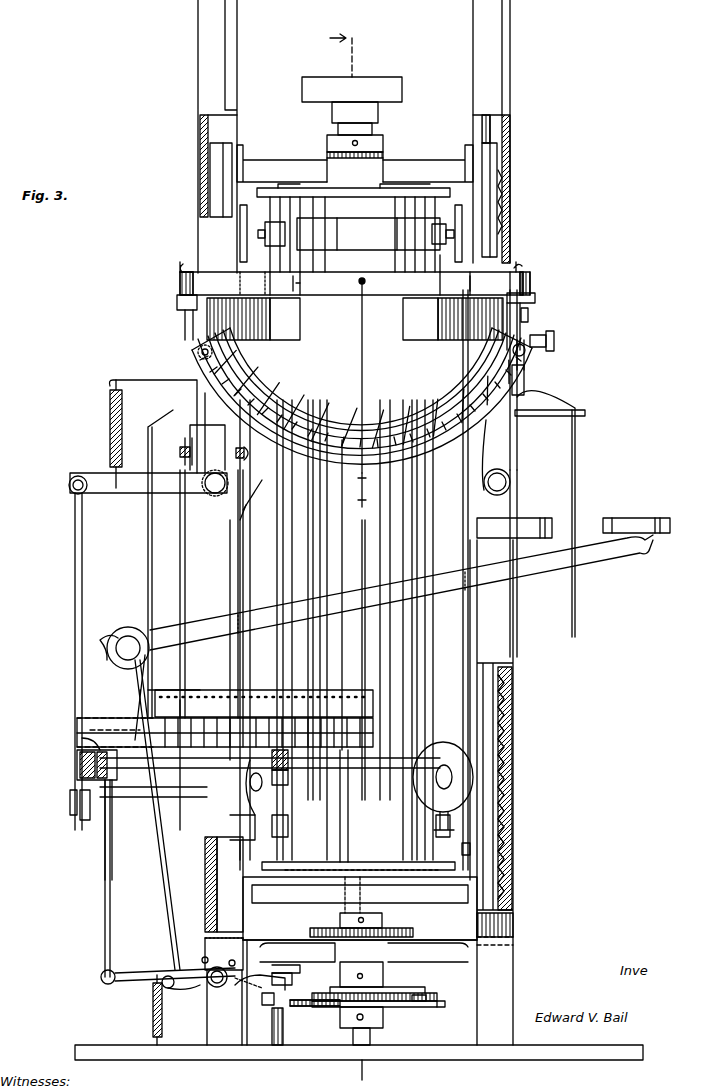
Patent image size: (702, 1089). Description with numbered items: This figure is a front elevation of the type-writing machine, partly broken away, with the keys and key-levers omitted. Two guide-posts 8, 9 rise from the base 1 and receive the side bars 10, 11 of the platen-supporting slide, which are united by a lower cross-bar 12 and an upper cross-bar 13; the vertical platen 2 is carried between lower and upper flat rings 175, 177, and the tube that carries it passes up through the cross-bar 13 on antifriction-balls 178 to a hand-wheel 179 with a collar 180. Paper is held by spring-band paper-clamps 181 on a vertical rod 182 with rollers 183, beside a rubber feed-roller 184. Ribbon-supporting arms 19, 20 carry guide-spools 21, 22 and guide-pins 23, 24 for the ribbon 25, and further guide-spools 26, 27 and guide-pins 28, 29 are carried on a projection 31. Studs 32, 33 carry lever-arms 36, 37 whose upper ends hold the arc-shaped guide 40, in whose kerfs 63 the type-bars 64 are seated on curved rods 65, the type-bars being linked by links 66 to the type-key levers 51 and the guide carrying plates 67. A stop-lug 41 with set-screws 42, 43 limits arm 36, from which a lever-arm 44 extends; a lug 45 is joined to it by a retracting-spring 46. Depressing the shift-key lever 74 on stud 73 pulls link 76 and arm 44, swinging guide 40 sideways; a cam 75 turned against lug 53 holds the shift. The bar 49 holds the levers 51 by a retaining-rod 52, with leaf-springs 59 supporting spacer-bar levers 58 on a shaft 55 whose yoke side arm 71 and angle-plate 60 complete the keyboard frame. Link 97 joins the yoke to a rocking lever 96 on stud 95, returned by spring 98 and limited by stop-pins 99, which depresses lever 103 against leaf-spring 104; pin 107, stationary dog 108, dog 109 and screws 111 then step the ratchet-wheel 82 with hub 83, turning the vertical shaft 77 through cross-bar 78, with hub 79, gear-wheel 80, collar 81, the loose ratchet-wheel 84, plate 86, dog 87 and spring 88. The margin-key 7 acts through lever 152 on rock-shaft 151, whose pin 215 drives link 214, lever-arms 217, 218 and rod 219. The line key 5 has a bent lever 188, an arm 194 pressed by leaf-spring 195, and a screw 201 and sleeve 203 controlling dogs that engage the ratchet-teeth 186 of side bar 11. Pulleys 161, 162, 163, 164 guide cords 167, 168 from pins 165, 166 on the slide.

The base 1 is at (432, 1072).
The platen 2 is at (287, 630).
The platen-raising or line key 5 is at (514, 528).
The margin-key 7 is at (636, 525).
The guide-post 8 is at (217, 136).
The guide-post 9 is at (491, 131).
The side bar 10 is at (222, 162).
The side bar 11 is at (492, 172).
The cross-bar 12 is at (418, 895).
The cross-bar 13 is at (412, 166).
The ribbon-supporting arm 19 is at (453, 319).
The ribbon-supporting arm 20 is at (253, 319).
The guide-spool 21 is at (440, 270).
The guide-spool 22 is at (262, 268).
The guide-pin 23 is at (457, 283).
The guide-pin 24 is at (300, 283).
The ribbon 25 is at (201, 281).
The guide-spool 26 is at (182, 263).
The guide-spool 27 is at (518, 265).
The guide-pin 28 is at (176, 270).
The guide-pin 29 is at (531, 278).
The projection 31 is at (536, 300).
The stud 32 is at (215, 495).
The stud 33 is at (497, 482).
The lever-arm 36 is at (207, 447).
The lever-arm 37 is at (499, 390).
The arc-shaped guide 40 is at (526, 368).
The stop-lug 41 is at (185, 445).
The set-screw 42 is at (248, 452).
The set-screw 43 is at (180, 453).
The lever-arm 44 is at (100, 475).
The lug 45 is at (146, 380).
The retracting-spring 46 is at (108, 412).
The bar 49 is at (115, 732).
The type-key lever 51 is at (148, 556).
The retaining-rod 52 is at (220, 700).
The lug or projection 53 is at (80, 758).
The transverse shaft 55 is at (220, 770).
The spacer-bar lever 58 is at (280, 730).
The bent leaf-spring 59 is at (288, 780).
The angle-plate 60 is at (195, 692).
The kerf 63 is at (196, 344).
The type-bar 64 is at (364, 358).
The curved rod 65 is at (528, 349).
The link 66 is at (364, 490).
The plate 67 is at (196, 348).
The side arm 71 is at (86, 740).
The stud 73 is at (118, 808).
The lever 74 is at (88, 820).
The cam 75 is at (70, 815).
The link 76 is at (74, 586).
The vertical shaft 77 is at (344, 903).
The cross-bar 78 is at (428, 952).
The hub 79 is at (338, 919).
The gear-wheel 80 is at (308, 932).
The collar 81 is at (350, 968).
The ratchet-wheel 82 is at (315, 1016).
The hub 83 is at (384, 1017).
The ratchet-wheel 84 is at (374, 991).
The plate 86 is at (410, 988).
The dog 87 is at (440, 1008).
The spring 88 is at (428, 998).
The stud 95 is at (214, 990).
The rocking lever 96 is at (138, 972).
The link 97 is at (106, 920).
The spring 98 is at (152, 1022).
The stop-pin 99 is at (222, 954).
The lever 103 is at (297, 952).
The leaf-spring 104 is at (292, 1026).
The pin 107 is at (298, 967).
The stationary dog 108 is at (289, 983).
The dog 109 is at (266, 1005).
The headed screw or rivet 111 is at (256, 1000).
The rock-shaft 151 is at (126, 636).
The lever 152 is at (401, 592).
The grooved pulley 161 is at (240, 236).
The grooved pulley 162 is at (264, 787).
The grooved pulley 163 is at (455, 220).
The grooved pulley 164 is at (442, 752).
The pin 165 is at (252, 836).
The pin 166 is at (472, 849).
The cord 167 is at (240, 660).
The cord 168 is at (470, 661).
The flat ring 175 is at (452, 866).
The flat ring 177 is at (270, 192).
The antifriction-balls 178 is at (385, 153).
The hand-wheel 179 is at (352, 106).
The collar 180 is at (378, 137).
The paper-clamp 181 is at (368, 234).
The vertical rod 182 is at (349, 789).
The roller 183 is at (268, 223).
The rubber roller 184 is at (295, 510).
The ratchet-teeth 186 is at (506, 762).
The bent lever 188 is at (518, 486).
The arm 194 is at (583, 410).
The bent leaf-spring 195 is at (522, 420).
The screw 201 is at (529, 314).
The sleeve 203 is at (555, 336).
The link 214 is at (150, 840).
The pin 215 is at (98, 640).
The inner lever-arm 217 is at (253, 987).
The outer lever-arm 218 is at (196, 990).
The vertical rod 219 is at (180, 582).